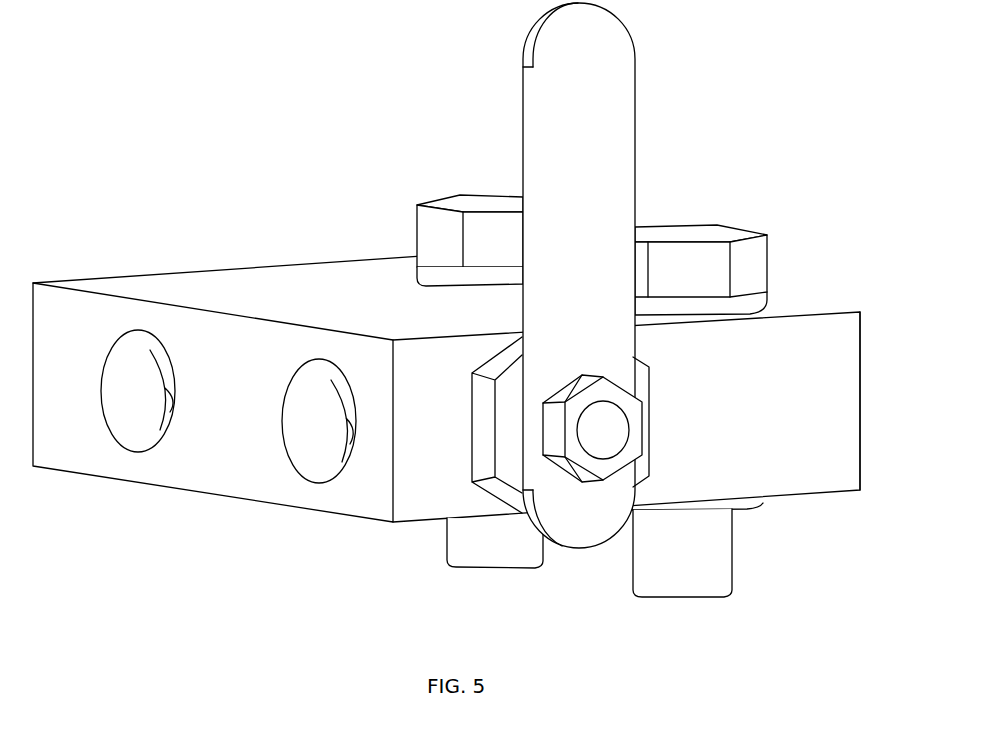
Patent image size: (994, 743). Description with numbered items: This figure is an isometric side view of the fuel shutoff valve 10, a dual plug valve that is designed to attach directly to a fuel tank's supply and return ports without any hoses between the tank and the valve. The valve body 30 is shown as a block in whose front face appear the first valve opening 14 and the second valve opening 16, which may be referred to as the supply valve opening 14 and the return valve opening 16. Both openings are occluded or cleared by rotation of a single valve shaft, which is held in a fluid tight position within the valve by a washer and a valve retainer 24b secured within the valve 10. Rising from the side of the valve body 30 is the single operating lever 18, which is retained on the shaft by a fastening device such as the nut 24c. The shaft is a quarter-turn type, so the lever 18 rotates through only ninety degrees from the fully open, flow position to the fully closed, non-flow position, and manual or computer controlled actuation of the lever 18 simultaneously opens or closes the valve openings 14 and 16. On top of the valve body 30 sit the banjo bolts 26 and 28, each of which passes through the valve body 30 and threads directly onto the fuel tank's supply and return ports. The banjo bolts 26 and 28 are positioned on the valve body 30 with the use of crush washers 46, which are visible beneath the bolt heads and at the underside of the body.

The fuel shutoff valve 10 is at (808, 305).
The first valve opening 14 is at (299, 452).
The second valve opening 16 is at (150, 435).
The lever 18 is at (625, 156).
The valve retainer 24b is at (645, 463).
The nut 24c is at (638, 418).
The banjo bolt 26 is at (723, 230).
The banjo bolt 28 is at (468, 202).
The valve body 30 is at (853, 347).
The crush washer 46 is at (430, 271).